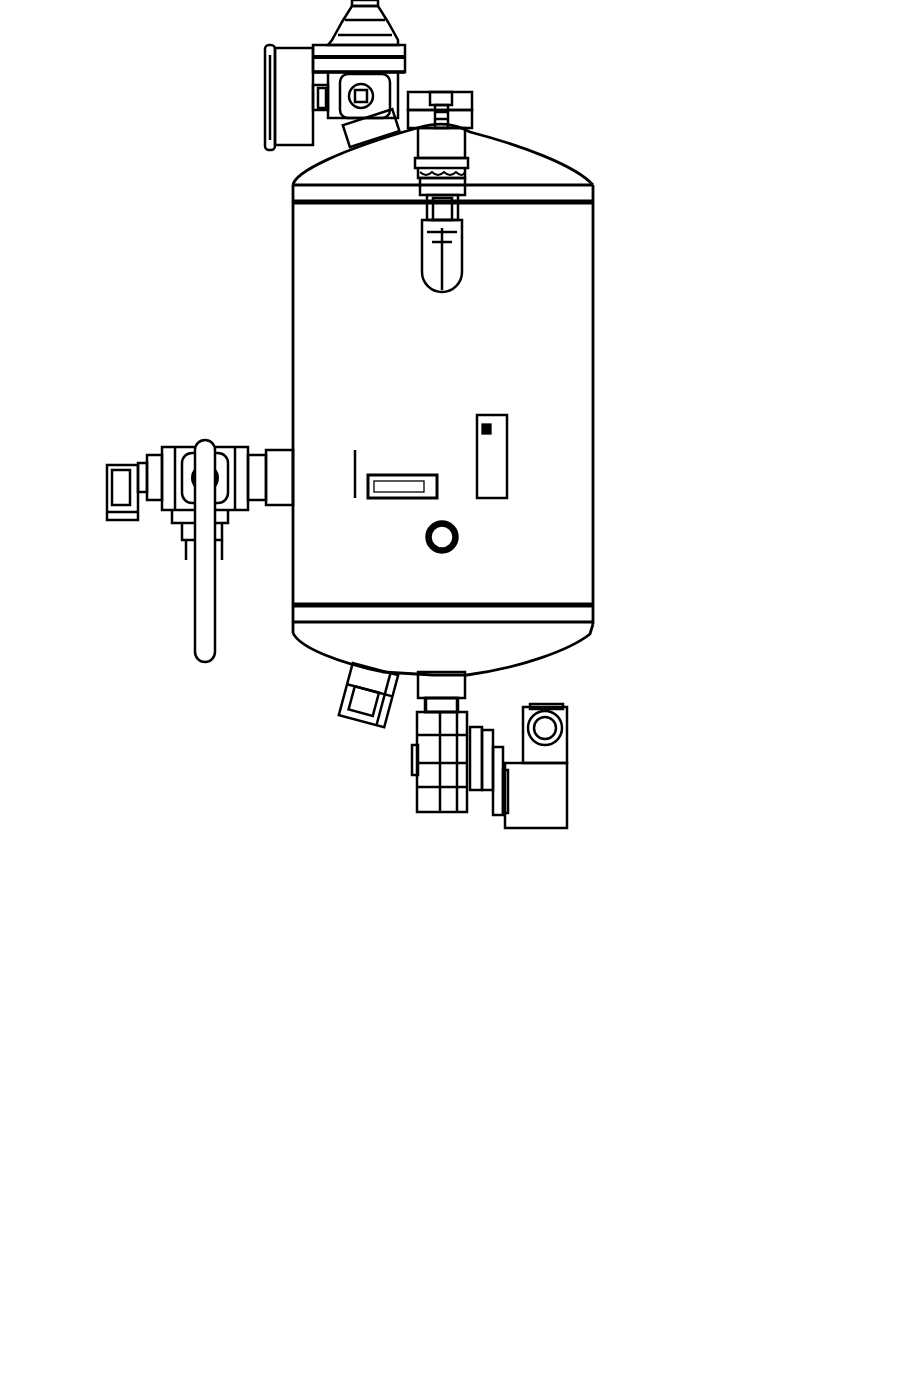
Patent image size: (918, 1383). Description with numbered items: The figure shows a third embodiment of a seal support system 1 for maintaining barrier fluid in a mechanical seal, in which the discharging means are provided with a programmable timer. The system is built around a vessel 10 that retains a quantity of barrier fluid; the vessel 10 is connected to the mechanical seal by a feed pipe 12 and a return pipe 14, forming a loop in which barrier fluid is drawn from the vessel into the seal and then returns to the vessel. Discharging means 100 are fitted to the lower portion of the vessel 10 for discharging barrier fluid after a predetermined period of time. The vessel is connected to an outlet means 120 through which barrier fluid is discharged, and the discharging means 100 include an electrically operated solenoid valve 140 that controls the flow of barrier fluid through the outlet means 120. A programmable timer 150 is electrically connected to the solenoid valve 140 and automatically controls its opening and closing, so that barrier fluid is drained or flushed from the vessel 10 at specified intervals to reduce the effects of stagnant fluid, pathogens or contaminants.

The seal support system 1 is at (457, 322).
The vessel 10 is at (597, 348).
The feed pipe 12 is at (344, 720).
The return pipe 14 is at (184, 573).
The discharging means 100 is at (411, 762).
The outlet means 120 is at (442, 815).
The solenoid valve 140 is at (493, 725).
The programmable timer 150 is at (570, 798).